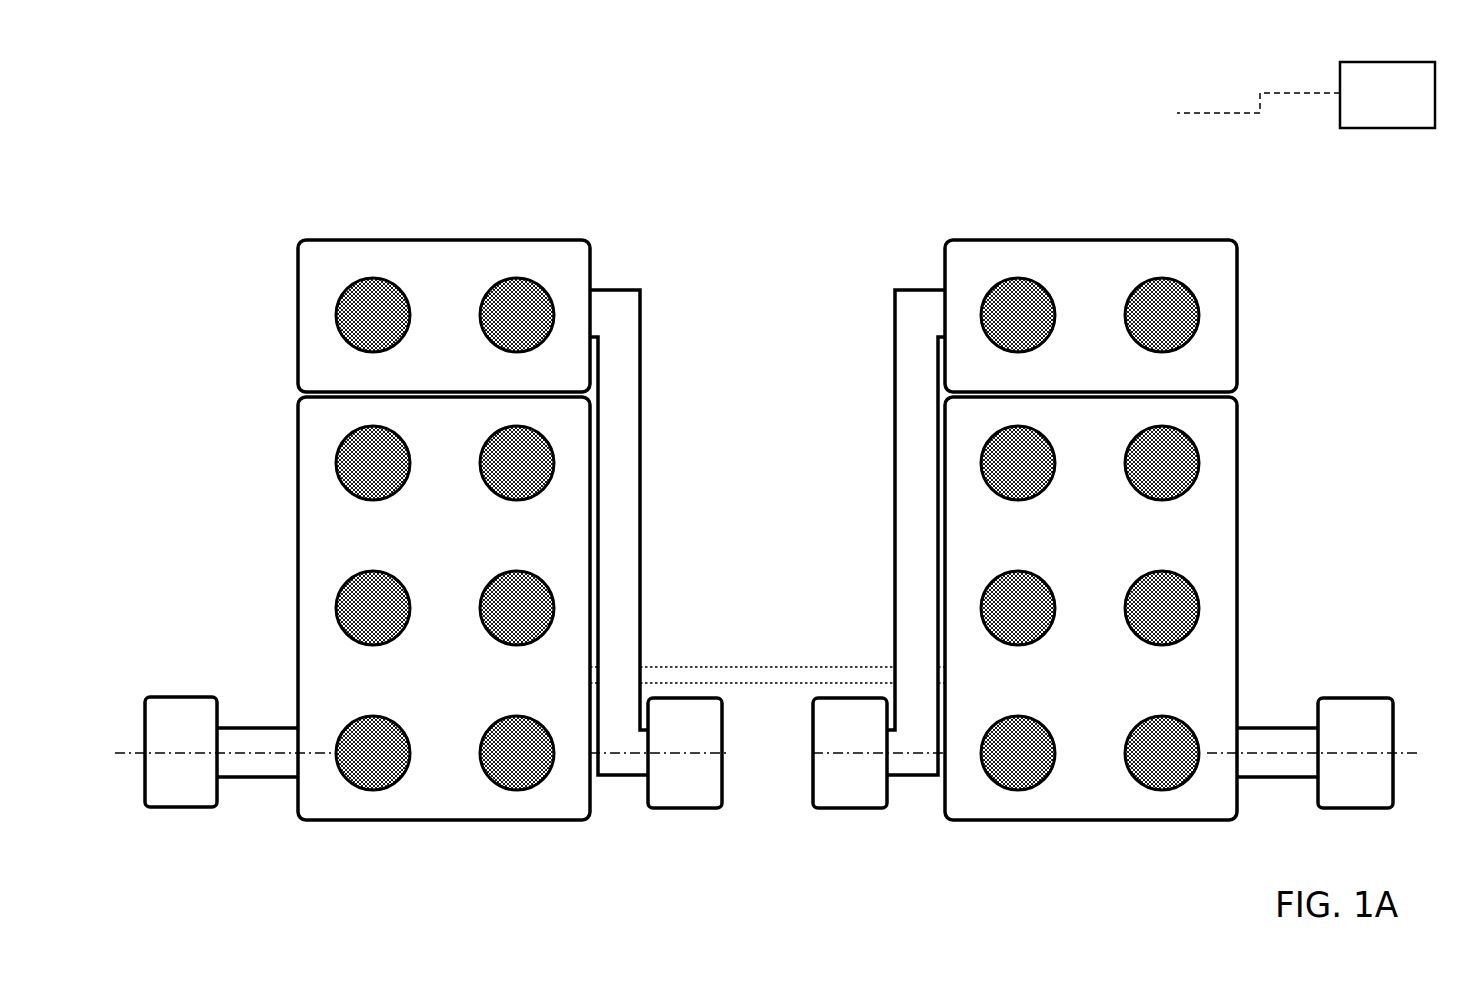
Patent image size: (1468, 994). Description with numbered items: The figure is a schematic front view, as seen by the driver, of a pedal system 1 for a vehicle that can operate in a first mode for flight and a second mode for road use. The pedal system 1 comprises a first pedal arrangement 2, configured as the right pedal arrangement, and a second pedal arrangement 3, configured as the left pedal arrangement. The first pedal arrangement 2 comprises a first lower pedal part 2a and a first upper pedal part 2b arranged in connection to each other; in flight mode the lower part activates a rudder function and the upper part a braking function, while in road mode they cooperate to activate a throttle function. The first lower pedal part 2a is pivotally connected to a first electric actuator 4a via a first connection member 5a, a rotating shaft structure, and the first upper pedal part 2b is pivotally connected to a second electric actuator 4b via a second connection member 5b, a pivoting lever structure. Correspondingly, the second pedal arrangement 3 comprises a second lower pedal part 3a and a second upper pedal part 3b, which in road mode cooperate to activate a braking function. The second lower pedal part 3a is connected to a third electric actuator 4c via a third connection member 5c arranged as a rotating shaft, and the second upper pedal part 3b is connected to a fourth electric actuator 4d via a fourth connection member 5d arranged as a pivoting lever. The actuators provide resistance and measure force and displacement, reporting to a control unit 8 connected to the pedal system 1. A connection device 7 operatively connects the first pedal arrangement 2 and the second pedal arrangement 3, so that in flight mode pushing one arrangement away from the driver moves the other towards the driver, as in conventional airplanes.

The pedal system 1 is at (976, 124).
The first pedal arrangement 2 is at (1274, 227).
The second pedal arrangement 3 is at (250, 230).
The first lower pedal part 2a is at (1212, 568).
The first upper pedal part 2b is at (1218, 325).
The second lower pedal part 3a is at (325, 568).
The second upper pedal part 3b is at (310, 337).
The first electric actuator 4a is at (1378, 732).
The second electric actuator 4b is at (857, 790).
The third electric actuator 4c is at (156, 732).
The fourth electric actuator 4d is at (688, 790).
The first connection member 5a is at (1265, 737).
The second connection member 5b is at (903, 600).
The third connection member 5c is at (275, 735).
The fourth connection member 5d is at (627, 555).
The connection device 7 is at (778, 677).
The control unit 8 is at (1380, 115).